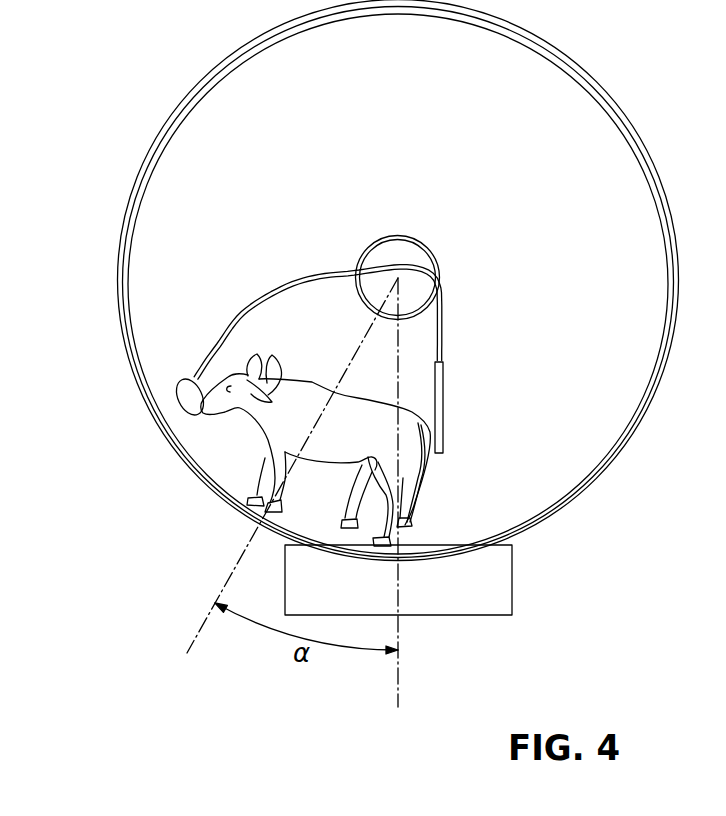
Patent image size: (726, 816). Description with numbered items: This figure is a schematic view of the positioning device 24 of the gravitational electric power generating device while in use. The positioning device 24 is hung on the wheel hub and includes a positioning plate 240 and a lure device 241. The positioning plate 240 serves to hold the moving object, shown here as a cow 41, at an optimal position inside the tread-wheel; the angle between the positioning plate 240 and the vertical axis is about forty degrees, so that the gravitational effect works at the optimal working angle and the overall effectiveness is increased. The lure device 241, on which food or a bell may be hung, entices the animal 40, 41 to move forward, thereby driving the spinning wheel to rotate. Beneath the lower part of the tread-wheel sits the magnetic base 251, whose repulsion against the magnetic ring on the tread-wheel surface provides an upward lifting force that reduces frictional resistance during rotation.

The positioning device 24 is at (241, 313).
The lure device 241 is at (206, 364).
The animal (cow) 40 is at (261, 450).
The cow 41 is at (262, 422).
The positioning plate 240 is at (440, 427).
The magnetic base 251 is at (497, 590).